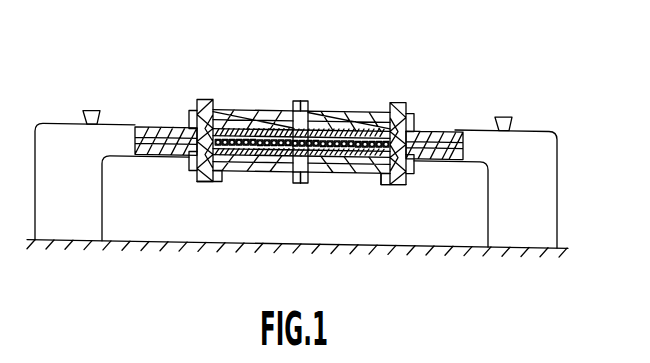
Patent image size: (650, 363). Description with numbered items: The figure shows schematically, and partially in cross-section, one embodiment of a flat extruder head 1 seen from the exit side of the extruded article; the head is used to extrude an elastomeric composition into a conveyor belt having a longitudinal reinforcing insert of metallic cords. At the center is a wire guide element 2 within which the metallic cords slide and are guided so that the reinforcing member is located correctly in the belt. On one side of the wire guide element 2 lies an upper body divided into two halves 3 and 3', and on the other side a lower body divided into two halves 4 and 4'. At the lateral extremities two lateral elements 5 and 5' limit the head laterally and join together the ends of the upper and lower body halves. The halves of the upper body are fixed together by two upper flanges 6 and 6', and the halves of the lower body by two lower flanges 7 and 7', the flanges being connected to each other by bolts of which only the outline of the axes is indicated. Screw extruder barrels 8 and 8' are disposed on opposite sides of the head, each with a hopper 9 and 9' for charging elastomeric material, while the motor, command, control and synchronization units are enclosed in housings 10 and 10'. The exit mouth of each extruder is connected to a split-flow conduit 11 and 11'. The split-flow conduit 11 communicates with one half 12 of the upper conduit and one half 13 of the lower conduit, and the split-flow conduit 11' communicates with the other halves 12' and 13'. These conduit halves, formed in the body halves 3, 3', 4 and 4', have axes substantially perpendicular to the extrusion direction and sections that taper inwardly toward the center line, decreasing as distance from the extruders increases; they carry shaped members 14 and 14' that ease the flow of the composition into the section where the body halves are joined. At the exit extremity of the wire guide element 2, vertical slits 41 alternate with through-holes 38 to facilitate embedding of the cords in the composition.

The flat extruder head 1 is at (300, 131).
The wire guide element 2 is at (388, 180).
The upper body member half 3 is at (253, 91).
The upper body member half 3' is at (349, 84).
The lower body member half 4 is at (253, 195).
The lower body member half 4' is at (349, 195).
The lateral element 5 is at (192, 90).
The lateral element 5' is at (429, 98).
The upper flange 6 is at (286, 71).
The upper flange 6' is at (319, 72).
The lower flange 7 is at (303, 203).
The lower flange 7' is at (317, 203).
The screw extruder barrel 8 is at (166, 118).
The screw extruder barrel 8' is at (441, 116).
The hopper 9 is at (91, 94).
The hopper 9' is at (519, 97).
The housing 10 is at (85, 157).
The housing 10' is at (516, 165).
The split-flow conduit 11 is at (172, 173).
The split-flow conduit 11' is at (434, 173).
The upper conduit half 12 is at (219, 117).
The upper conduit half 12' is at (404, 123).
The lower conduit half 13 is at (210, 203).
The lower conduit half 13' is at (389, 200).
The shaped member 14 is at (257, 148).
The shaped member 14' is at (345, 135).
The through-hole 38 is at (372, 131).
The vertical slit 41 is at (360, 141).